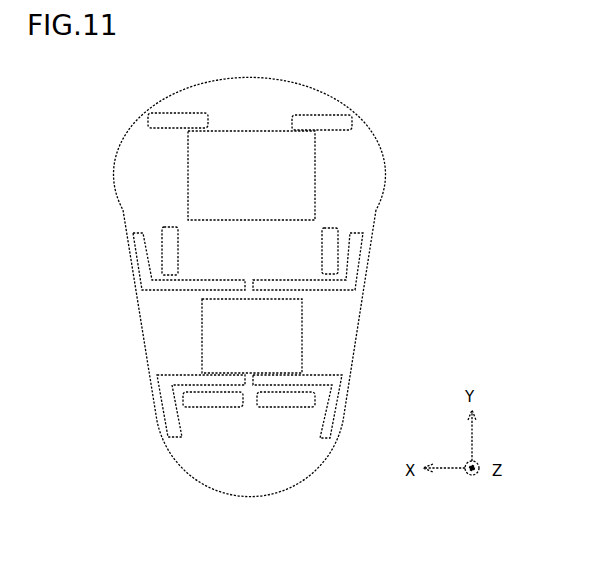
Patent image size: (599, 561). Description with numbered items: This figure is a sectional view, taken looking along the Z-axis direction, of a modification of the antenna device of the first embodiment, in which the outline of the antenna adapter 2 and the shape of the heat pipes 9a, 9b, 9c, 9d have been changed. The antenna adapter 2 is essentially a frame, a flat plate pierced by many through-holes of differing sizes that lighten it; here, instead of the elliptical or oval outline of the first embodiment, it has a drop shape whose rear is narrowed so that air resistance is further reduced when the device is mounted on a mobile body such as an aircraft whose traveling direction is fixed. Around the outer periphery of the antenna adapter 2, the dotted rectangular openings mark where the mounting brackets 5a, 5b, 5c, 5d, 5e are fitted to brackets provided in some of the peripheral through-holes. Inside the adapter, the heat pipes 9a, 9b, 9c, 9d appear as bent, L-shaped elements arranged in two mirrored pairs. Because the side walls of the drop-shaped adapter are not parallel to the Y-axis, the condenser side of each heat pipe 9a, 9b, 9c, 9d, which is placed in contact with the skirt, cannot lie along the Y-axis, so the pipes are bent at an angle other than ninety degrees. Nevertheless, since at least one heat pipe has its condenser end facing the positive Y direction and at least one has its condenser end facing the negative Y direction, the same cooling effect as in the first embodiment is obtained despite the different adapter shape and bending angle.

The antenna adapter 2 is at (266, 286).
The mounting bracket 5a is at (154, 102).
The mounting bracket 5b is at (342, 100).
The mounting bracket 5c is at (127, 225).
The mounting bracket 5d is at (178, 502).
The mounting bracket 5e is at (293, 402).
The heat pipe 9a is at (159, 261).
The heat pipe 9b is at (337, 261).
The heat pipe 9c is at (172, 395).
The heat pipe 9d is at (326, 404).